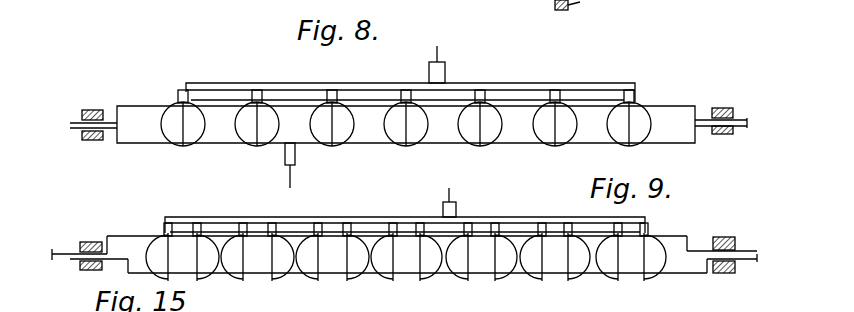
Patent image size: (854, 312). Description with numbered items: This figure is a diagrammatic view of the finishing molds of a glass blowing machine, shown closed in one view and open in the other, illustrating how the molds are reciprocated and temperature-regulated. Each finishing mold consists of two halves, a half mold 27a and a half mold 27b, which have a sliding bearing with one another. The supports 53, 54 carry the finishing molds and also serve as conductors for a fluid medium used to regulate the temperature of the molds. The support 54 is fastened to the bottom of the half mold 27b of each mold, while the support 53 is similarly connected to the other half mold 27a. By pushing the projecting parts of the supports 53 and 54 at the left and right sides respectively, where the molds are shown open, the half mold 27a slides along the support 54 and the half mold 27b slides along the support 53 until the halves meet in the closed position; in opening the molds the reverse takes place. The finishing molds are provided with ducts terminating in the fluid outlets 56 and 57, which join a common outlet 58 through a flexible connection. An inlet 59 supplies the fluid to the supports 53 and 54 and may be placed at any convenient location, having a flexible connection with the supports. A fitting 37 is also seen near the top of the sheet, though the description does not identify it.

In FIG. 8, the half mold 27a is at (233, 140).
In FIG. 9, the half mold 27a is at (163, 235).
In FIG. 8, the half mold 27b is at (390, 150).
In FIG. 9, the half mold 27b is at (196, 281).
In FIG. 8, the fitting 37 is at (575, 14).
In FIG. 8, the support 53 is at (72, 121).
In FIG. 9, the support 53 is at (60, 254).
In FIG. 8, the support 54 is at (81, 127).
In FIG. 9, the support 54 is at (82, 259).
In FIG. 8, the outlet 56 is at (337, 79).
In FIG. 9, the outlet 56 is at (338, 212).
In FIG. 8, the outlet 57 is at (397, 76).
In FIG. 9, the outlet 57 is at (396, 209).
In FIG. 8, the common outlet 58 is at (439, 58).
In FIG. 9, the common outlet 58 is at (452, 200).
In FIG. 8, the inlet 59 is at (288, 177).